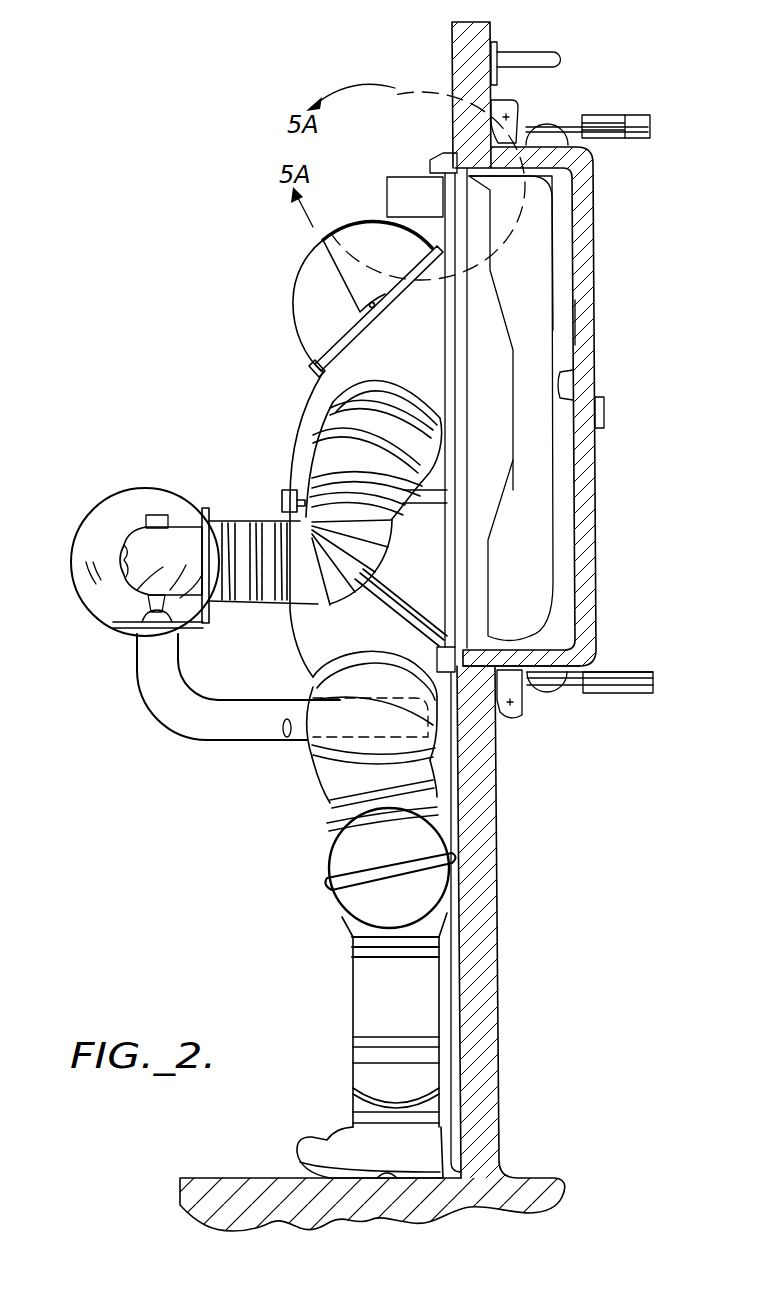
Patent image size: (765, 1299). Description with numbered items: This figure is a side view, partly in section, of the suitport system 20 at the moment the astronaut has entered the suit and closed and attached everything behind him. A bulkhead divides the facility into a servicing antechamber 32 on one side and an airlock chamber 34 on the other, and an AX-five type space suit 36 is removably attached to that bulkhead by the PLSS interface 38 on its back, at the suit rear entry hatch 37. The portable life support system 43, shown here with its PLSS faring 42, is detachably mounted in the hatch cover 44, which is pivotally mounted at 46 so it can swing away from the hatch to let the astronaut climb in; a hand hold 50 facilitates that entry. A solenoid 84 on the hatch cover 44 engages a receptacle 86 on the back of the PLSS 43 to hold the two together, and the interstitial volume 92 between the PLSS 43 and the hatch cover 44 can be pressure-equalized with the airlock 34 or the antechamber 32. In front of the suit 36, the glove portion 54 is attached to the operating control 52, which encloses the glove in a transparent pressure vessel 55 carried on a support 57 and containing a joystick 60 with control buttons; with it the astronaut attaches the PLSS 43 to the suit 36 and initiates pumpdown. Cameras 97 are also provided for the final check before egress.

The suitport system 20 is at (622, 585).
The servicing antechamber 32 is at (245, 955).
The airlock chamber 34 is at (329, 700).
The space suit 36 is at (427, 523).
The suit rear entry hatch 37 is at (513, 483).
The PLSS interface 38 is at (455, 393).
The PLSS faring 42 is at (533, 557).
The portable life support system (PLSS) 43 is at (568, 506).
The hatch cover 44 is at (580, 633).
The pivot mounting 46 is at (637, 693).
The hand hold 50 is at (545, 52).
The operating control 52 is at (110, 476).
The glove portion 54 is at (143, 590).
The transparent pressure vessel 55 is at (97, 512).
The support 57 is at (187, 710).
The joystick 60 is at (160, 514).
The solenoid 84 is at (600, 397).
The receptacle 86 is at (590, 330).
The interstitial volume 92 is at (557, 192).
The cameras 97 is at (400, 180).